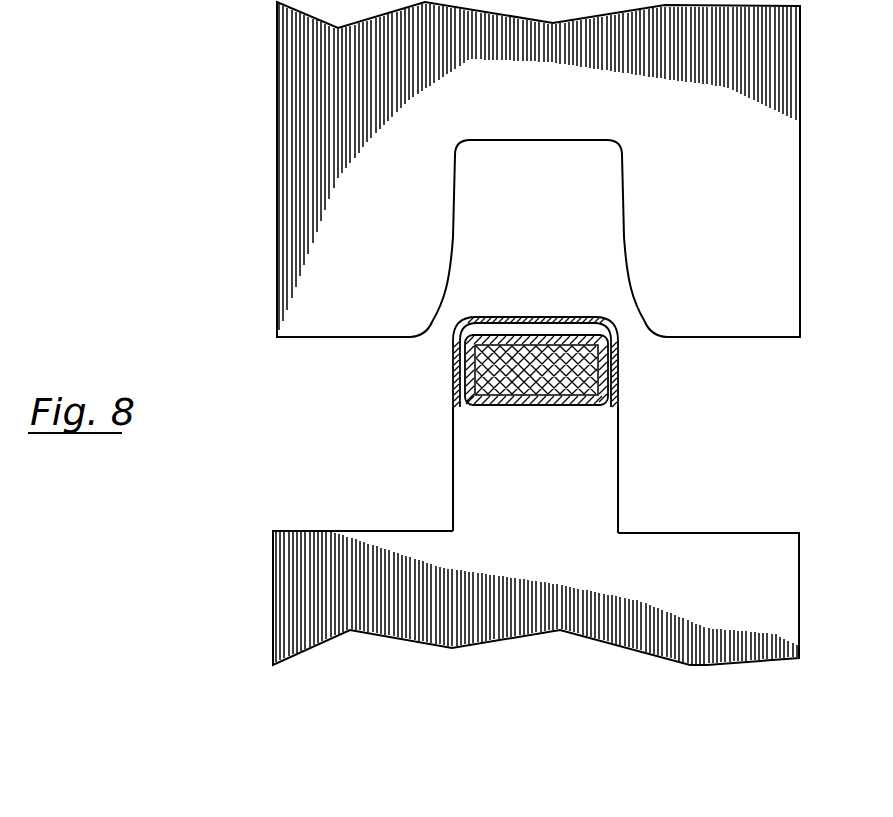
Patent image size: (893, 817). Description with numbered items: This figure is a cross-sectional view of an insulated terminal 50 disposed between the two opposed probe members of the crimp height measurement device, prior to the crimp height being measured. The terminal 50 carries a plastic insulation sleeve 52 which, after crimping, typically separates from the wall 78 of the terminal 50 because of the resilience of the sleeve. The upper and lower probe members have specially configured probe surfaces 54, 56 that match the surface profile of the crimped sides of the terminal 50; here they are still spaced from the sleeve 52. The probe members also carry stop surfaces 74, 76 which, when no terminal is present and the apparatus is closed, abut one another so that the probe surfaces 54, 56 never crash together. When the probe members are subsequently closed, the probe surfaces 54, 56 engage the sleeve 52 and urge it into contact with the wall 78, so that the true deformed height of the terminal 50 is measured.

The terminal 50 is at (476, 320).
The insulation sleeve 52 is at (515, 320).
The probe surface 54 is at (490, 409).
The probe surface 56 is at (548, 141).
The stop surface 74 is at (657, 532).
The stop surface 76 is at (682, 338).
The wall 78 is at (537, 337).